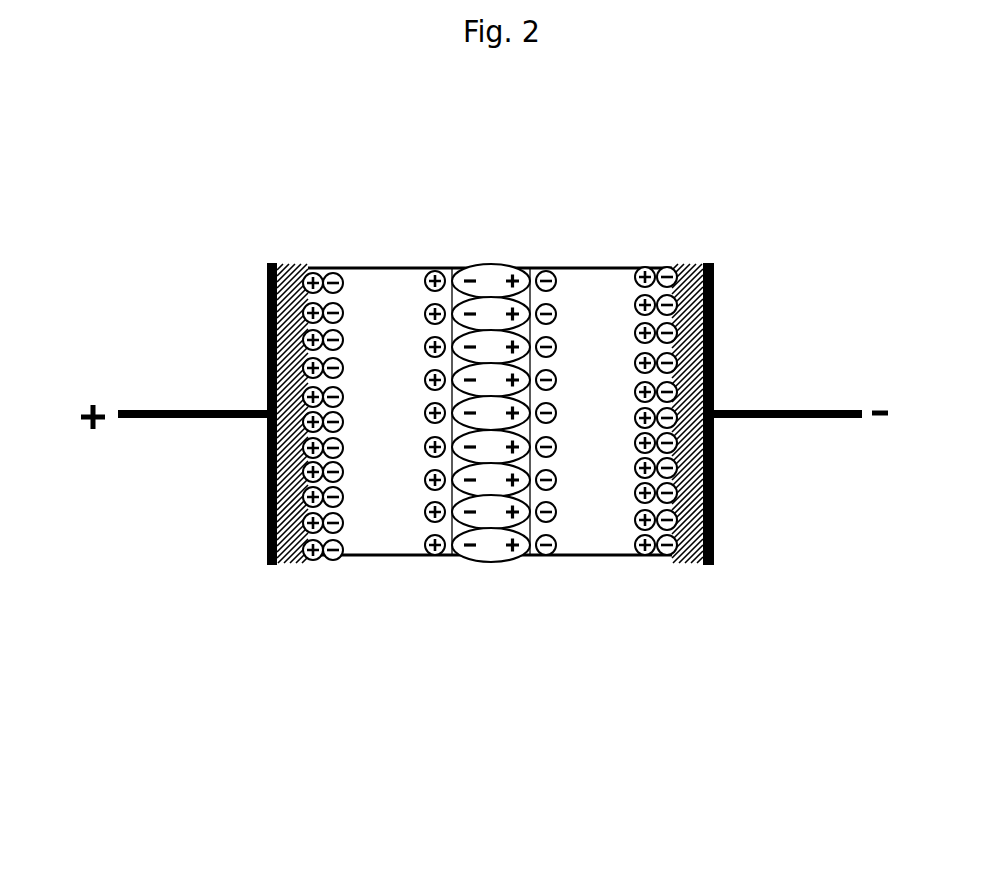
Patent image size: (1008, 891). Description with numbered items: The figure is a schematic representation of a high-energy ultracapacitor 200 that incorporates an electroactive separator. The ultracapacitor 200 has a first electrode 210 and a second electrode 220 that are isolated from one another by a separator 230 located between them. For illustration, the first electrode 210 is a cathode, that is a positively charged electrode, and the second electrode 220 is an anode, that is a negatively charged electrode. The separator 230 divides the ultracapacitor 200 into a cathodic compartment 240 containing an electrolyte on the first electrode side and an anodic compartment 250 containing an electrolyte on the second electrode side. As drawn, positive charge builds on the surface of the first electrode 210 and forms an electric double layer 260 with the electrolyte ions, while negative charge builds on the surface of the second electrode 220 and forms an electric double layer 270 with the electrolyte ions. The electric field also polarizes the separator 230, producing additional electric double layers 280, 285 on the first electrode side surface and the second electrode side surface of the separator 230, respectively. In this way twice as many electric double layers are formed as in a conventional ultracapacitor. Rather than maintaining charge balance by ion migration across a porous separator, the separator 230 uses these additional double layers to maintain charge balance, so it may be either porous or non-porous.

The ultracapacitor 200 is at (100, 207).
The first electrode 210 is at (272, 578).
The second electrode 220 is at (712, 578).
The separator 230 is at (492, 585).
The cathodic compartment 240 is at (377, 541).
The anodic compartment 250 is at (591, 542).
The electric double layer 260 is at (321, 250).
The electric double layer 270 is at (655, 250).
The electric double layer at the first surface 280 is at (453, 250).
The electric double layer at the second surface 285 is at (530, 250).